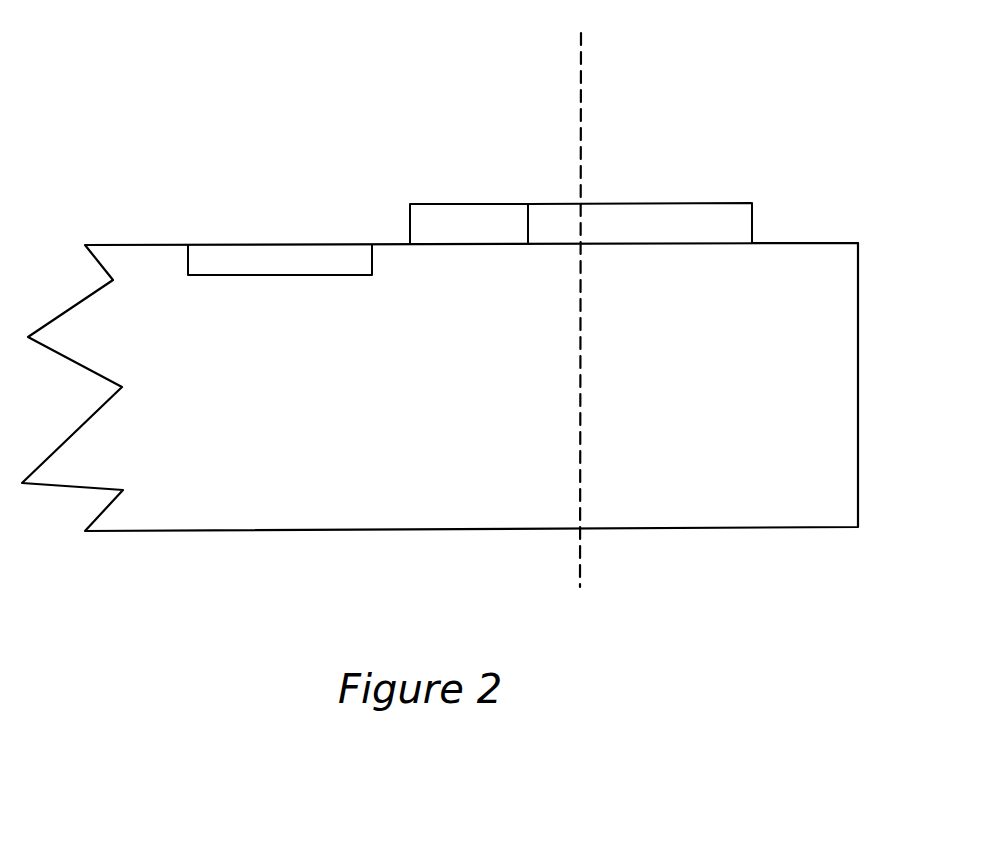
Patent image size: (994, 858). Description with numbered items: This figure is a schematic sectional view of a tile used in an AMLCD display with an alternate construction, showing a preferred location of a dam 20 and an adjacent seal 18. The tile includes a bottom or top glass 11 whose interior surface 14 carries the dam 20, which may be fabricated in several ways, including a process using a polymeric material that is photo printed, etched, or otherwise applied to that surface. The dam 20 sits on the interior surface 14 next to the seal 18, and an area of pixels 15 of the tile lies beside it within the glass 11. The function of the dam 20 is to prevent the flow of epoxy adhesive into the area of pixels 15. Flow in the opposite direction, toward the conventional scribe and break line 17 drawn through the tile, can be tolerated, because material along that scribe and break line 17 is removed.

The glass 11 is at (360, 402).
The interior surface 14 is at (787, 243).
The pixels 15 is at (240, 245).
The scribe and break line 17 is at (581, 153).
The seal 18 is at (655, 203).
The dam 20 is at (432, 204).